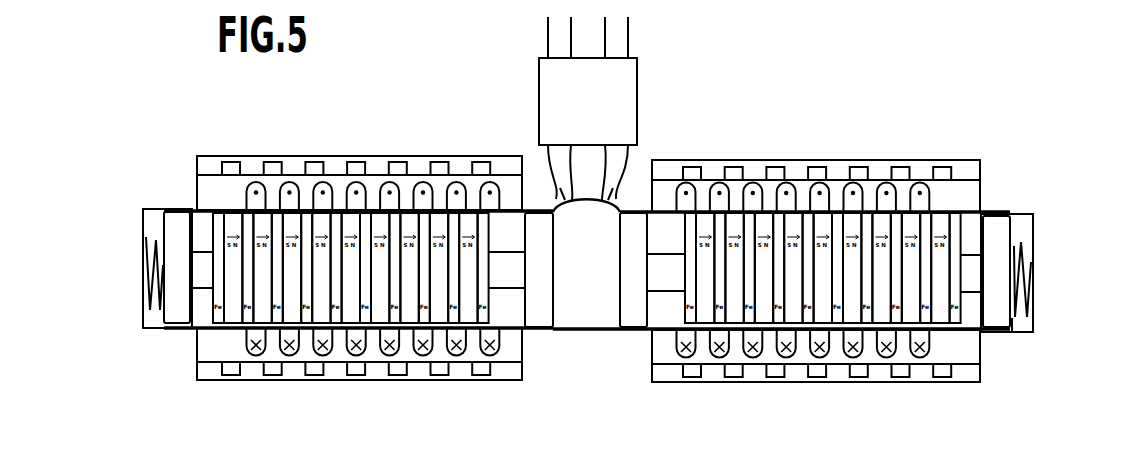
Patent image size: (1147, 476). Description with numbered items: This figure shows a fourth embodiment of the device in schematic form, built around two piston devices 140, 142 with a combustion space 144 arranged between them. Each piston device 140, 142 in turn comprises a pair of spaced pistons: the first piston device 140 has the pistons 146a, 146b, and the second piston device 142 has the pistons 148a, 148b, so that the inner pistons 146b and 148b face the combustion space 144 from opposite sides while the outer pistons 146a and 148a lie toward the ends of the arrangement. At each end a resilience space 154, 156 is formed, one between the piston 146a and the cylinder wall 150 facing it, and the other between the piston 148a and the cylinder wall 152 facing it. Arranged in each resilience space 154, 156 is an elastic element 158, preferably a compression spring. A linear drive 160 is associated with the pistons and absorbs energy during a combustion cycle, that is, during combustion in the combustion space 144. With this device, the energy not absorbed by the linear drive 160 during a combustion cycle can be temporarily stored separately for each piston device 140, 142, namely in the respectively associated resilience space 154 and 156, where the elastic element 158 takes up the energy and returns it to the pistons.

The piston device 140 is at (177, 311).
The piston device 142 is at (637, 312).
The combustion space 144 is at (586, 308).
The piston 146a is at (178, 222).
The piston 146b is at (541, 226).
The piston 148a is at (993, 228).
The piston 148b is at (633, 226).
The cylinder wall 150 is at (143, 297).
The cylinder wall 152 is at (1033, 248).
The resilience space 154 is at (155, 318).
The resilience space 156 is at (1027, 322).
The elastic element 158 is at (1030, 277).
The linear drive 160 is at (797, 125).